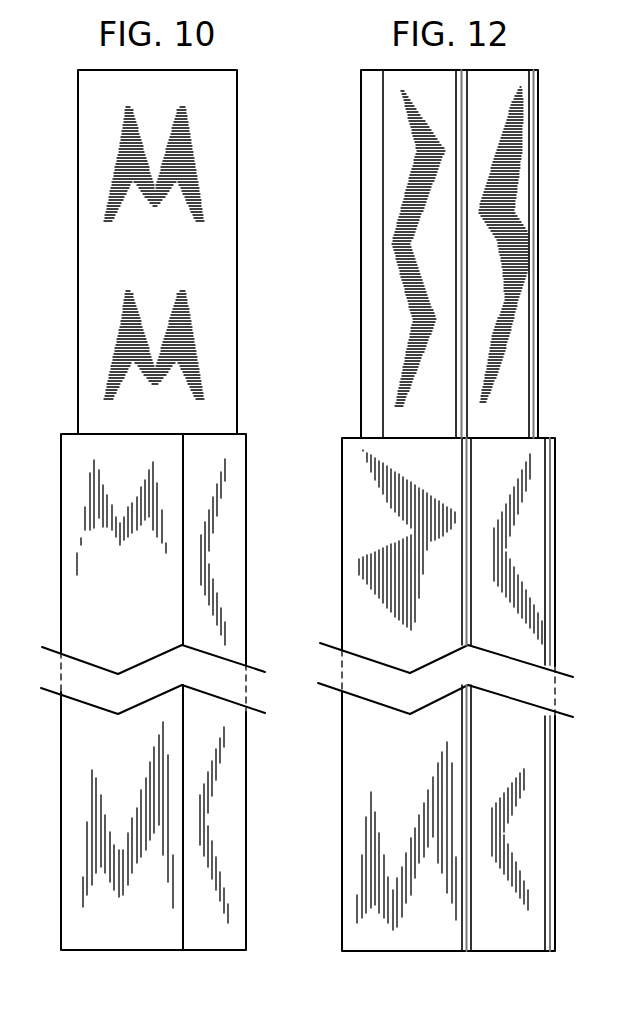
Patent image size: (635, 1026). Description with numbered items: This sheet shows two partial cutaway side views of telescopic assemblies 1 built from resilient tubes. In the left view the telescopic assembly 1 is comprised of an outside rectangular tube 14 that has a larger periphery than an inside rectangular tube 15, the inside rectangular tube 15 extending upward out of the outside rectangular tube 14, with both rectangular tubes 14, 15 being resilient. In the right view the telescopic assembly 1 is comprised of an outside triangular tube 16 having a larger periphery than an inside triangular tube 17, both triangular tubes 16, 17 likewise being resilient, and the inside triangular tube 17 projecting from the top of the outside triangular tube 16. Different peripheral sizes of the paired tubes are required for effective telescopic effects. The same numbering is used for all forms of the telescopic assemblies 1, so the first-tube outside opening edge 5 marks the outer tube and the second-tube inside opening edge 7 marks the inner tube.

In FIG. 10, the telescopic assembly 1 is at (48, 503).
In FIG. 12, the telescopic assembly 1 is at (330, 503).
In FIG. 10, the first-tube outside opening edge 5 is at (183, 543).
In FIG. 12, the second-tube inside opening edge 7 is at (383, 237).
In FIG. 10, the outside rectangular tube 14 is at (164, 602).
In FIG. 10, the inside rectangular tube 15 is at (164, 254).
In FIG. 12, the outside triangular tube 16 is at (444, 602).
In FIG. 12, the inside triangular tube 17 is at (447, 250).